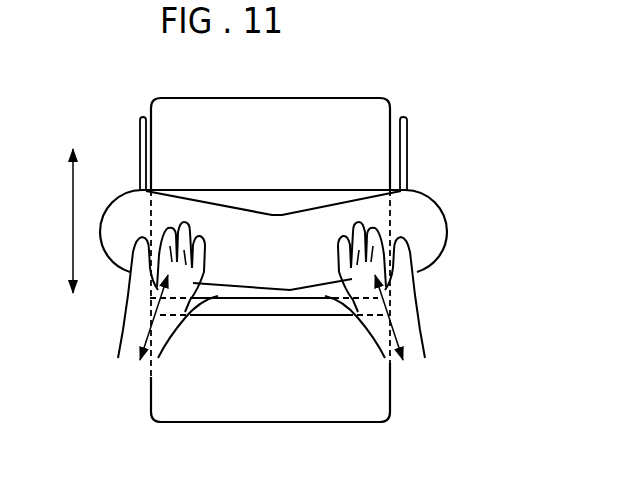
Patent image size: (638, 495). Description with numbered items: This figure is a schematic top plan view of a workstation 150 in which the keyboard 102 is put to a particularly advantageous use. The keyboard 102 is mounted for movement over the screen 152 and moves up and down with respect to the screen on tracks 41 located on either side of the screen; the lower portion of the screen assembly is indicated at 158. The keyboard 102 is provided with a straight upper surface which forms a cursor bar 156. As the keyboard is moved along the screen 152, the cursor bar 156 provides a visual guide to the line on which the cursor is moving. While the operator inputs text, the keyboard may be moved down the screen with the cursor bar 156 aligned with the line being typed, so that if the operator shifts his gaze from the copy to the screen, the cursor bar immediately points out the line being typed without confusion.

The workstation 150 is at (295, 265).
The screen 152 is at (331, 97).
The lower cover portion 158 is at (370, 411).
The tracks 41 is at (138, 136).
The keyboard 102 is at (448, 229).
The cursor bar 156 is at (308, 191).